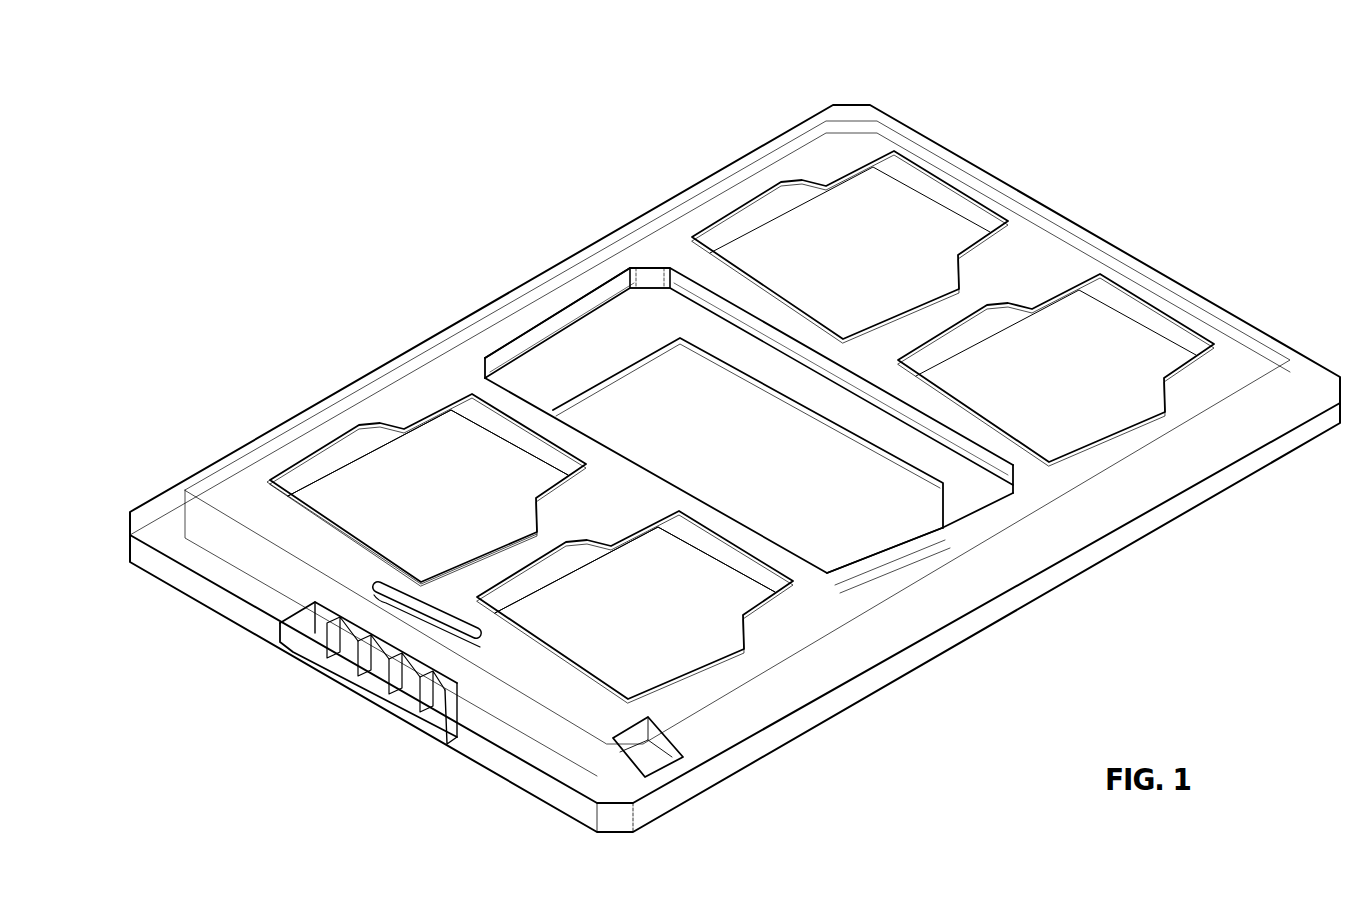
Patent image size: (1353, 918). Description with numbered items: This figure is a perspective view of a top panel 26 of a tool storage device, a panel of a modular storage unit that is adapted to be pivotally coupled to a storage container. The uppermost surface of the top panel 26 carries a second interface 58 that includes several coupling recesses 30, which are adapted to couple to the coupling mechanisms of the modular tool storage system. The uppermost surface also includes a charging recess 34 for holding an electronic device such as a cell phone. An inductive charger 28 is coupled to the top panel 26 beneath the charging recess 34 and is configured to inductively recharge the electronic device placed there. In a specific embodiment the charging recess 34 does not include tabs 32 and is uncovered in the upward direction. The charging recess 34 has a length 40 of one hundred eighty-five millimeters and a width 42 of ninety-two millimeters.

The top panel 26 is at (1070, 212).
The inductive charger 28 is at (843, 535).
The coupling recesses 30 is at (970, 360).
The tabs 32 is at (400, 407).
The charging recess 34 is at (640, 308).
The length 40 is at (588, 333).
The width 42 is at (805, 372).
The second interface 58 is at (655, 583).